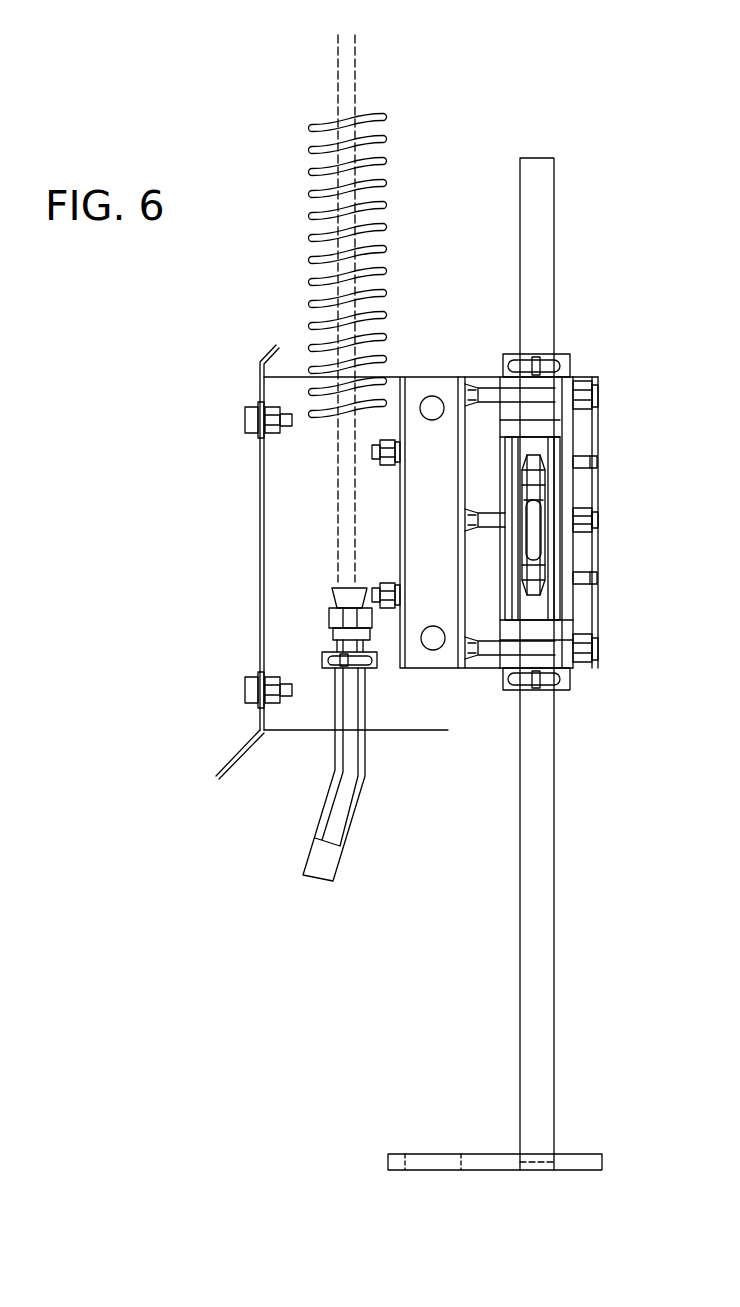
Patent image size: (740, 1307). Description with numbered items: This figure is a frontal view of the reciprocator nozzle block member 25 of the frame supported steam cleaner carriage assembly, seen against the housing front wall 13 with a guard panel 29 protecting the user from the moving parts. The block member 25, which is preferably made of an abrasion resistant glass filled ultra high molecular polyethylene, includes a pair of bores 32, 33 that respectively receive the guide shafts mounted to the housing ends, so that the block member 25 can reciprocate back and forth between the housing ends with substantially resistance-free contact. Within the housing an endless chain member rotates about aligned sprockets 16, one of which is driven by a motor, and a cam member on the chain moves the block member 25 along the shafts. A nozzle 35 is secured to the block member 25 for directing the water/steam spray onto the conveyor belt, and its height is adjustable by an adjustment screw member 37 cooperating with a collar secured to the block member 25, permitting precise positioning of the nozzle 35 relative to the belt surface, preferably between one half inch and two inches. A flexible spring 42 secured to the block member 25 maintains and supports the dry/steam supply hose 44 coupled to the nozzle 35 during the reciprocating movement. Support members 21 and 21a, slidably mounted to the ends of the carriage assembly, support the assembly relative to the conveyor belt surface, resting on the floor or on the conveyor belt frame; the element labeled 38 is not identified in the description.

The housing front wall 13 is at (502, 503).
The sprocket 16 is at (537, 577).
The support member 21 is at (505, 1152).
The support member 21a is at (520, 903).
The reciprocator nozzle block member 25 is at (419, 657).
The guard panel 29 is at (260, 548).
The bore 32 is at (432, 396).
The bore 33 is at (436, 640).
The nozzle 35 is at (360, 787).
The adjustment screw member 37 is at (322, 658).
The clamp 38 is at (330, 672).
The flexible spring 42 is at (385, 143).
The dry/steam supply hose 44 is at (338, 88).